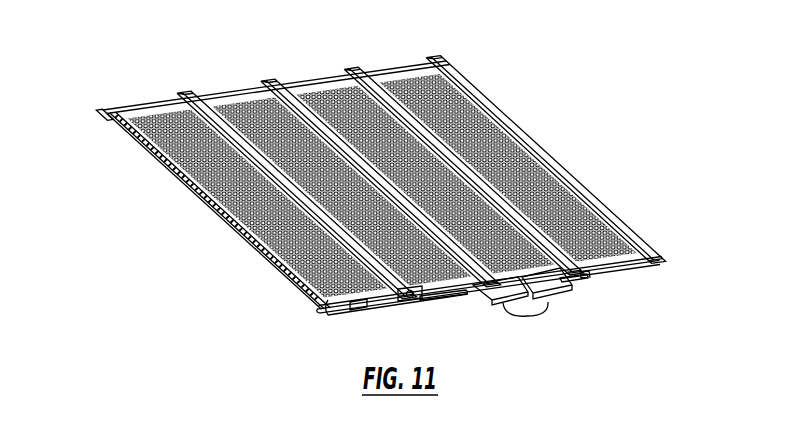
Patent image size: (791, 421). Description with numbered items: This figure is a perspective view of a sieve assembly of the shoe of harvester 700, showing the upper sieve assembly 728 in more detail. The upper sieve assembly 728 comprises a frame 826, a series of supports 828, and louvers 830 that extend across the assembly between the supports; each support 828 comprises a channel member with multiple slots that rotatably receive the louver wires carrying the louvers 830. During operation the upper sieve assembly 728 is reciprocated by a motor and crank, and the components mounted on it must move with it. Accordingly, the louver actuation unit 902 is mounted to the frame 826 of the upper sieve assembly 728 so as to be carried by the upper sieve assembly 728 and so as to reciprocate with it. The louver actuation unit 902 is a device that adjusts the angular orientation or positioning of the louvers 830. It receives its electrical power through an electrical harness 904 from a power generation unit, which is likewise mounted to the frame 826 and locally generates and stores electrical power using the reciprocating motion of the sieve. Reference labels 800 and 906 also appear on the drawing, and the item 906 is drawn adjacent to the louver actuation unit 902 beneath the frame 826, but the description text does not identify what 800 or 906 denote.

The harvester 700 is at (100, 69).
The frame 800 is at (228, 73).
The supports 828 is at (407, 198).
The upper sieve assembly 728 is at (531, 154).
The louvers 830 is at (527, 207).
The frame 826 is at (603, 278).
The louver actuation unit 902 is at (503, 305).
The electrical harness 904 is at (548, 303).
The connector 906 is at (550, 294).